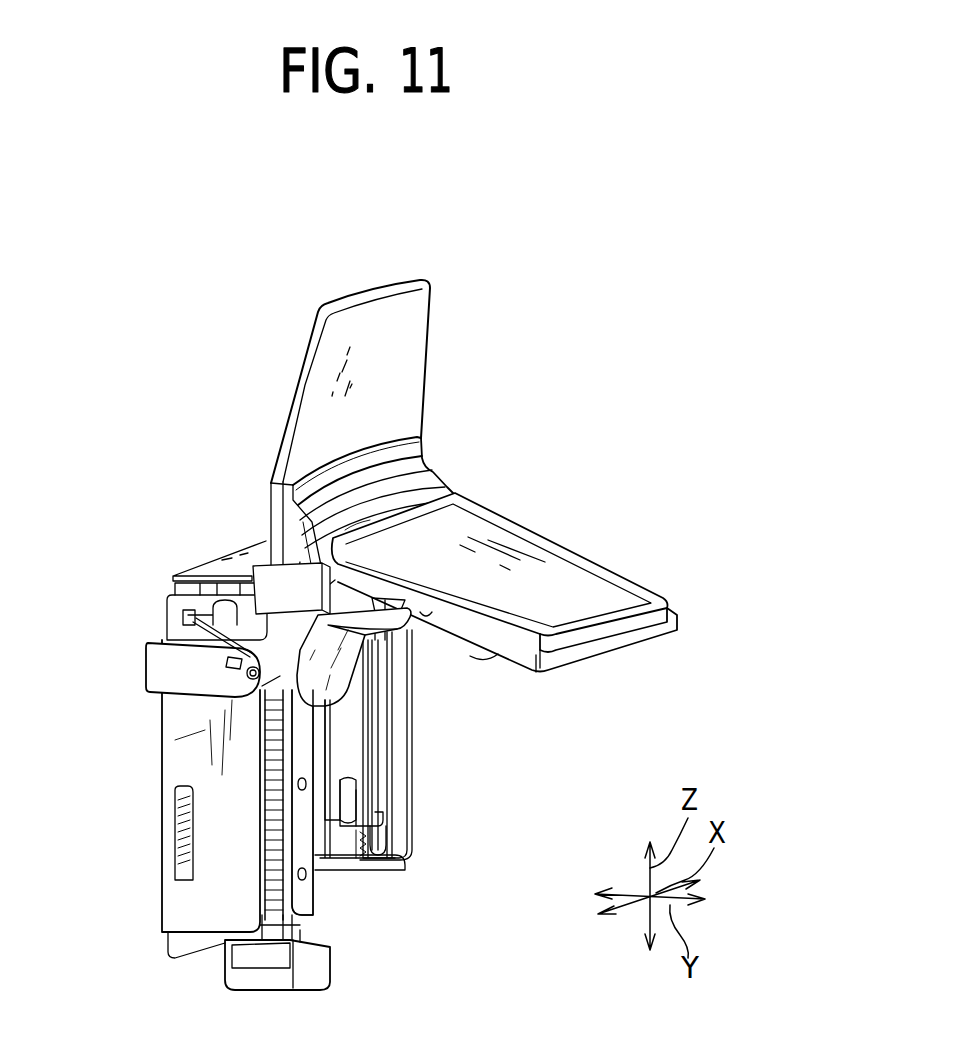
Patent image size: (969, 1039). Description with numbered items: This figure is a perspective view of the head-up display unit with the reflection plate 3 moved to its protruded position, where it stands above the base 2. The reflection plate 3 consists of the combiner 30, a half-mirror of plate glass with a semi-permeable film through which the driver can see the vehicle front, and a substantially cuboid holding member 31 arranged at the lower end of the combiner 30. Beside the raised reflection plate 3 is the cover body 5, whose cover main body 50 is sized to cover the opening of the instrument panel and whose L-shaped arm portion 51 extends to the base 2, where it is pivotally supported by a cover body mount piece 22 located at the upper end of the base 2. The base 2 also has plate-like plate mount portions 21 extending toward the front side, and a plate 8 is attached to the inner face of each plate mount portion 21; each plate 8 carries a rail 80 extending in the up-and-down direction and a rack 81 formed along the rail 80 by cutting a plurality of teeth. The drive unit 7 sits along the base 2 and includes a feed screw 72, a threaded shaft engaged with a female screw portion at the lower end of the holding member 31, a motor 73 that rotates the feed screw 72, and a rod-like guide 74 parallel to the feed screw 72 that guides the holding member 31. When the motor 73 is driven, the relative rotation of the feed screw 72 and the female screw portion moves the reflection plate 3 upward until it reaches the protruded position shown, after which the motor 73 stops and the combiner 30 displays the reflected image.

The base 2 is at (148, 741).
The reflection plate 3 is at (391, 430).
The cover body 5 is at (487, 580).
The drive unit 7 is at (267, 971).
The plate 8 is at (180, 793).
The plate mount portion 21 is at (183, 762).
The cover body mount piece 22 is at (148, 661).
The combiner 30 is at (433, 312).
The holding member 31 is at (430, 465).
The cover main body 50 is at (533, 538).
The arm portion 51 is at (360, 681).
The feed screw 72 is at (285, 845).
The motor 73 is at (245, 992).
The guide 74 is at (330, 840).
The rail 80 is at (382, 838).
The rack 81 is at (407, 862).